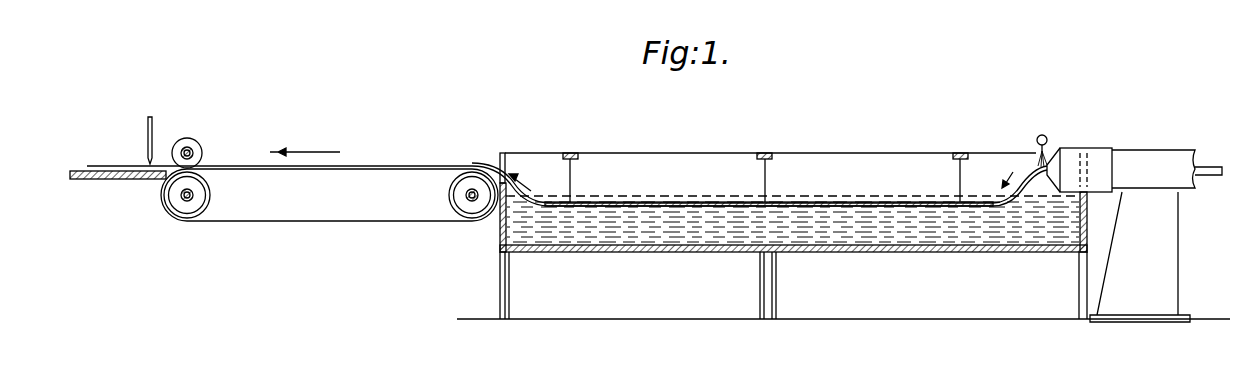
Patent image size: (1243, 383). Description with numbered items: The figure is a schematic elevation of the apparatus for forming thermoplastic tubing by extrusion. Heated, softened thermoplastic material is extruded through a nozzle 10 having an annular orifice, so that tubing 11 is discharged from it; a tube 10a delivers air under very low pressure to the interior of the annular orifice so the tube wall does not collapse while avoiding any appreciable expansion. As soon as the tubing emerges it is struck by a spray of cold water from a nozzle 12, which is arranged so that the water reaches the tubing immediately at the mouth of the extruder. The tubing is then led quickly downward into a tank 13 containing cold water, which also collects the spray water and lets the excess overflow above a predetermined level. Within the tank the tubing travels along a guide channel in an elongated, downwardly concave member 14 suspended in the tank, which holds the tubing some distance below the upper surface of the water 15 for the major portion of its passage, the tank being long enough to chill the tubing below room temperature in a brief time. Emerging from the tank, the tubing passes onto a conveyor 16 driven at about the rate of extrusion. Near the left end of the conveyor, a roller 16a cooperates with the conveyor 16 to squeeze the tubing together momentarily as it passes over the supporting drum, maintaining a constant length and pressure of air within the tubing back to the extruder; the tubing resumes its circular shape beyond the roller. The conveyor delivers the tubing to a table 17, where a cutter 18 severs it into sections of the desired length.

The nozzle 10 is at (1102, 154).
The tube 10a is at (1203, 167).
The tubing 11 is at (390, 166).
The nozzle 12 is at (1043, 134).
The tank 13 is at (671, 252).
The downwardly concave member 14 is at (708, 201).
The upper surface of the water 15 is at (641, 197).
The conveyor 16 is at (327, 222).
The roller 16a is at (203, 151).
The table 17 is at (108, 181).
The cutter 18 is at (147, 126).